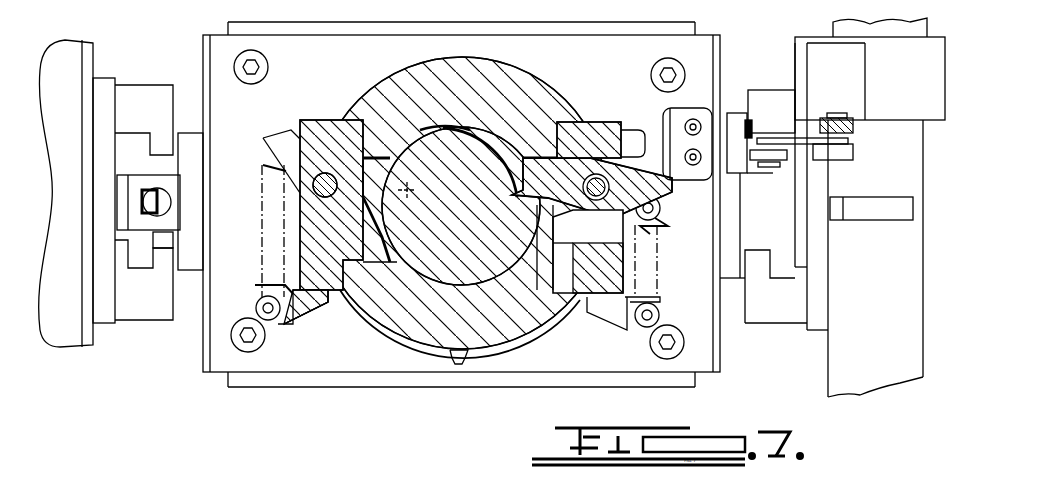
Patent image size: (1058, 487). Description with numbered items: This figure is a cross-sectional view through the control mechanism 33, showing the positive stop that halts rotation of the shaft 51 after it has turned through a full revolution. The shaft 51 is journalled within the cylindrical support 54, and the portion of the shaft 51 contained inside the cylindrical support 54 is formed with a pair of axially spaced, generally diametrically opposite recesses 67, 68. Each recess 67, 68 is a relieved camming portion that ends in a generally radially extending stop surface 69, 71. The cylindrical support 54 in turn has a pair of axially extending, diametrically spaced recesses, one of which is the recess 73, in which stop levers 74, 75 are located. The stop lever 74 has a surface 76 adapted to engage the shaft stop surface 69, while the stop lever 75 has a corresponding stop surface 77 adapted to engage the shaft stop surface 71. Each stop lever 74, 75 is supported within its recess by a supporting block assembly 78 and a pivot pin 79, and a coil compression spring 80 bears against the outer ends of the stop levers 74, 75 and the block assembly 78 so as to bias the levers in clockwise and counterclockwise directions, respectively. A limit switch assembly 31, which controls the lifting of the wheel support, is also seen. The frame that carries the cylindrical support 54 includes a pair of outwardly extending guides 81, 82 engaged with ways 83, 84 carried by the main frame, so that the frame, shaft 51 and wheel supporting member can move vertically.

The limit switch assembly 31 is at (804, 203).
The control mechanism 33 is at (378, 350).
The shaft 51 is at (412, 97).
The cylindrical support 54 is at (512, 72).
The recess 67 is at (502, 147).
The recess 68 is at (404, 150).
The stop surface 69 is at (510, 207).
The stop surface 71 is at (424, 181).
The recess 73 is at (378, 282).
The stop lever 74 is at (578, 160).
The stop lever 75 is at (283, 130).
The surface 76 is at (535, 256).
The stop surface 77 is at (366, 252).
The supporting block assembly 78 is at (600, 140).
The pivot pin 79 is at (660, 200).
The coil compression spring 80 is at (258, 297).
The guide 81 is at (193, 272).
The guide 82 is at (733, 270).
The way 83 is at (143, 82).
The way 84 is at (787, 325).